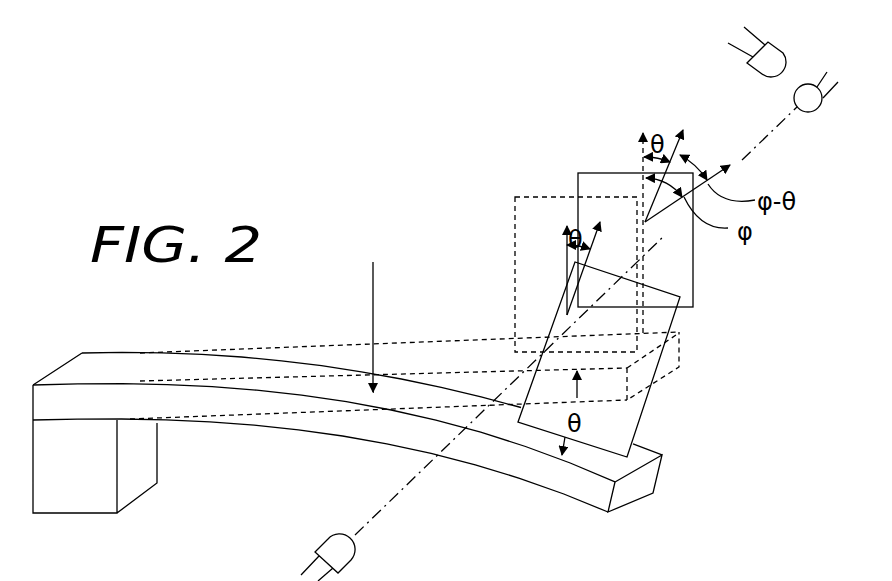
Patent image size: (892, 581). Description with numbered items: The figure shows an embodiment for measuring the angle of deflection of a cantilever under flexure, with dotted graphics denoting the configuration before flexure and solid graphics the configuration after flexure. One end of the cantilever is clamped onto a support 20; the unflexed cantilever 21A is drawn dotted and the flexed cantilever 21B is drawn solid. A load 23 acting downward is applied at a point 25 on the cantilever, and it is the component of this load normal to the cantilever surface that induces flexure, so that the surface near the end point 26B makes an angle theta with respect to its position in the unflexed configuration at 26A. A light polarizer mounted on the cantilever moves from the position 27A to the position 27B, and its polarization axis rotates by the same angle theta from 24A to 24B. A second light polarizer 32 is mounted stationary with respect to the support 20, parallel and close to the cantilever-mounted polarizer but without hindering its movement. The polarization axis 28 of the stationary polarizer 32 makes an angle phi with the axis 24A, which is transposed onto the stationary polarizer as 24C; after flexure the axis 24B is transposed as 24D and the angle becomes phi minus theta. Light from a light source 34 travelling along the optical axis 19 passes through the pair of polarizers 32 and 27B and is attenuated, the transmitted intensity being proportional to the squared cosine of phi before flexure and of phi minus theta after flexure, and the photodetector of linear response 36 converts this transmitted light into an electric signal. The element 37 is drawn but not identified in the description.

The optical axis 19 is at (510, 385).
The support 20 is at (95, 433).
The cantilever in configuration before flexure 21A is at (404, 375).
The cantilever in configuration after flexure 21B is at (347, 432).
The load 23 is at (370, 312).
The polarization axis of polarizer 27 before flexure 24A is at (546, 258).
The polarization axis of polarizer 27 after flexure 24B is at (597, 255).
The transposed polarization axis before flexure 24C is at (615, 218).
The transposed polarization axis after flexure 24D is at (680, 160).
The point of load application 25 is at (391, 394).
The end point of cantilever before flexure 26A is at (688, 366).
The end point of cantilever after flexure 26B is at (661, 485).
The light polarizer on cantilever before flexure 27A is at (546, 274).
The light polarizer on cantilever after flexure 27B is at (611, 359).
The polarization axis of polarizer 32 28 is at (721, 164).
The stationary light polarizer 32 is at (655, 240).
The light source 34 is at (814, 113).
The photodetector of linear response 36 is at (349, 557).
The second light source 37 is at (760, 43).